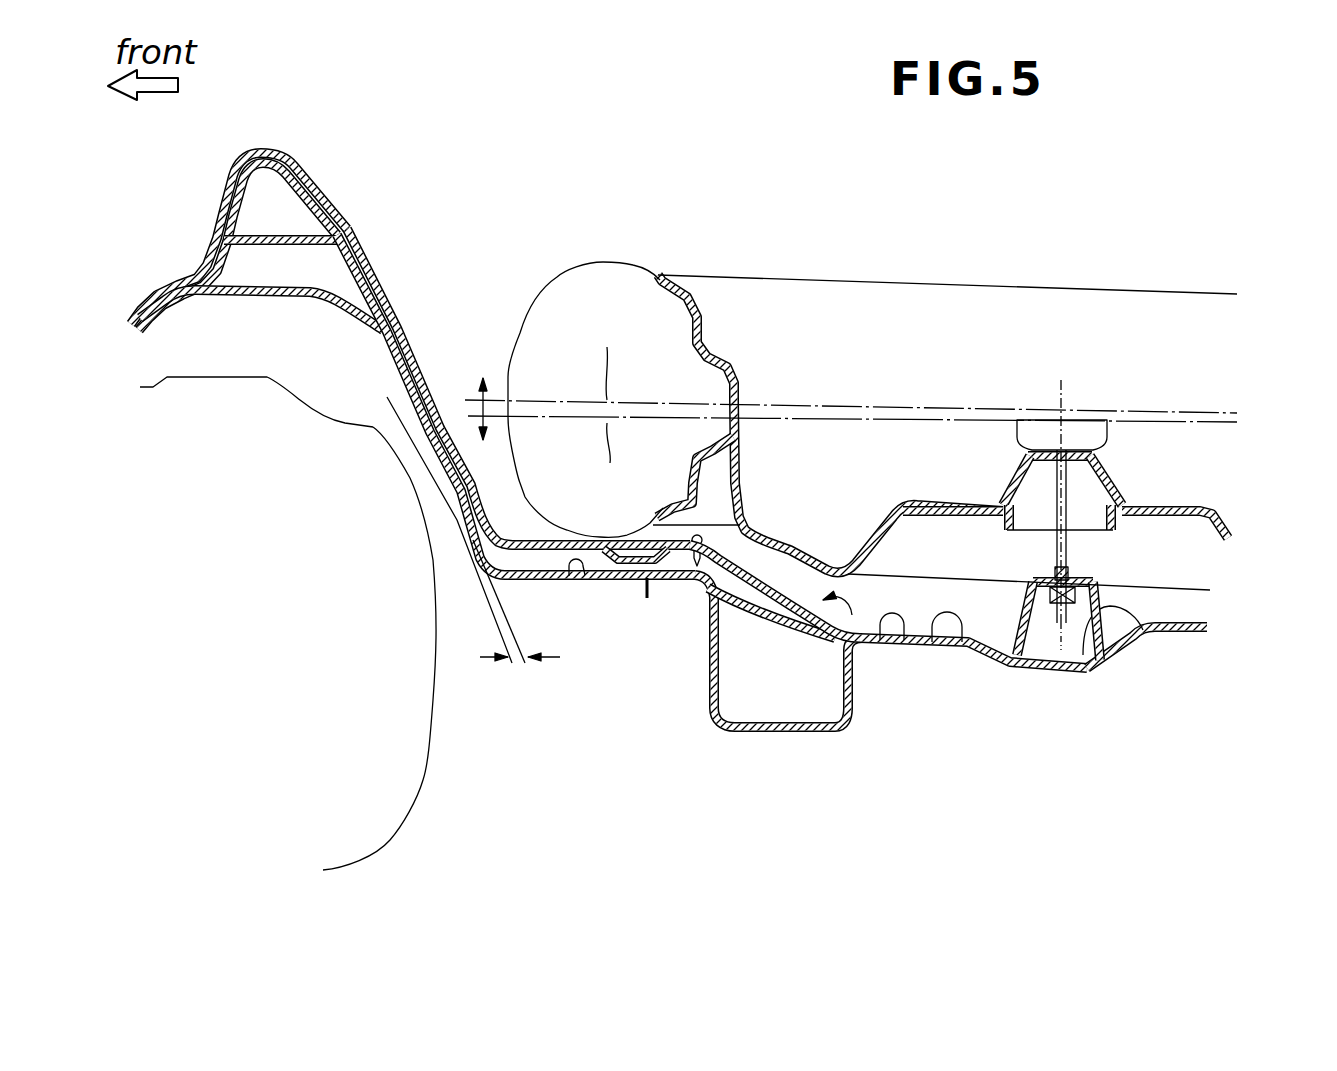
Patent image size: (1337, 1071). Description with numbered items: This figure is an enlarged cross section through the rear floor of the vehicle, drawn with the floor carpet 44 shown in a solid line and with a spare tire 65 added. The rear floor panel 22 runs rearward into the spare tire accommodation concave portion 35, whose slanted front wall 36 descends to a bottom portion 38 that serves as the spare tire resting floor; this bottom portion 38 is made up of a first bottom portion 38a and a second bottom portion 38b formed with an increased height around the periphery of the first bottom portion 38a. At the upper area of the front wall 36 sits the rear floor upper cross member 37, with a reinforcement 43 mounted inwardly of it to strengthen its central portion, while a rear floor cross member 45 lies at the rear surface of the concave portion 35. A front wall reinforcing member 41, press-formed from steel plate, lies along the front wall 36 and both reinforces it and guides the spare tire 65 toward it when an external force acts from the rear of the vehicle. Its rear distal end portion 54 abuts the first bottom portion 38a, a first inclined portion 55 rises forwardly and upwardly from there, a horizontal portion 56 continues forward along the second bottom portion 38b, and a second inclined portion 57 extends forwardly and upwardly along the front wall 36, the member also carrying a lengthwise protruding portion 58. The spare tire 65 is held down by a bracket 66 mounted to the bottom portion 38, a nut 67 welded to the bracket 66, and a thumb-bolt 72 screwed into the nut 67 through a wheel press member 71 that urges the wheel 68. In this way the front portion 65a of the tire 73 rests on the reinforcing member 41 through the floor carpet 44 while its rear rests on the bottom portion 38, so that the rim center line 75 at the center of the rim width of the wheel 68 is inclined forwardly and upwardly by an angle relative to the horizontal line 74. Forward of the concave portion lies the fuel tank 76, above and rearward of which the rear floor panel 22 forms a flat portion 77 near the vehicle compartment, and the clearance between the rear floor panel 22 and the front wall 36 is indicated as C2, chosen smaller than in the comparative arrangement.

The rear floor panel 22 is at (1200, 625).
The spare tire accommodation concave portion 35 is at (726, 212).
The front wall 36 is at (387, 397).
The rear floor upper cross member 37 is at (310, 173).
The bottom portion 38 is at (868, 585).
The first bottom portion 38a is at (960, 644).
The second bottom portion 38b is at (573, 577).
The front wall reinforcing member 41 is at (415, 335).
The reinforcement 43 is at (264, 238).
The floor carpet 44 is at (765, 530).
The rear floor cross member 45 is at (773, 733).
The rear distal end portion 54 is at (897, 644).
The first inclined portion 55 is at (868, 648).
The horizontal portion 56 is at (647, 598).
The second inclined portion 57 is at (416, 372).
The lengthwise protruding portion 58 is at (598, 570).
The spare tire 65 is at (1143, 277).
The front portion 65a is at (553, 266).
The bracket 66 is at (1143, 633).
The nut 67 is at (1087, 620).
The wheel 68 is at (703, 326).
The wheel press member 71 is at (1135, 452).
The thumb-bolt 72 is at (1077, 543).
The tire 73 is at (604, 261).
The horizontal line 74 is at (609, 459).
The rim center line 75 is at (609, 358).
The fuel tank 76 is at (423, 780).
The flat portion 77 is at (272, 292).
The clearance C2 is at (496, 536).